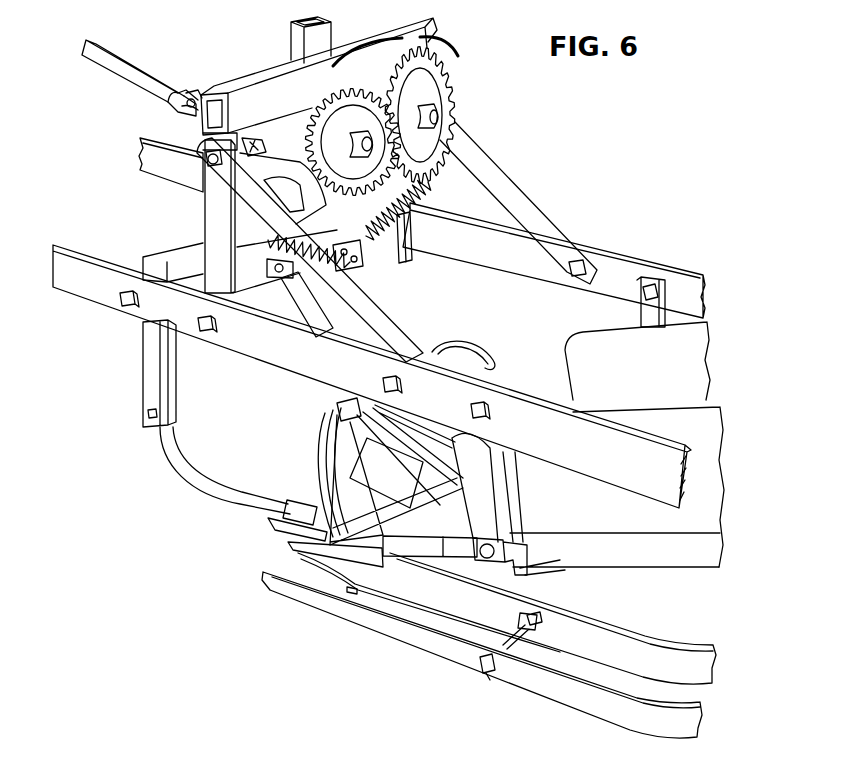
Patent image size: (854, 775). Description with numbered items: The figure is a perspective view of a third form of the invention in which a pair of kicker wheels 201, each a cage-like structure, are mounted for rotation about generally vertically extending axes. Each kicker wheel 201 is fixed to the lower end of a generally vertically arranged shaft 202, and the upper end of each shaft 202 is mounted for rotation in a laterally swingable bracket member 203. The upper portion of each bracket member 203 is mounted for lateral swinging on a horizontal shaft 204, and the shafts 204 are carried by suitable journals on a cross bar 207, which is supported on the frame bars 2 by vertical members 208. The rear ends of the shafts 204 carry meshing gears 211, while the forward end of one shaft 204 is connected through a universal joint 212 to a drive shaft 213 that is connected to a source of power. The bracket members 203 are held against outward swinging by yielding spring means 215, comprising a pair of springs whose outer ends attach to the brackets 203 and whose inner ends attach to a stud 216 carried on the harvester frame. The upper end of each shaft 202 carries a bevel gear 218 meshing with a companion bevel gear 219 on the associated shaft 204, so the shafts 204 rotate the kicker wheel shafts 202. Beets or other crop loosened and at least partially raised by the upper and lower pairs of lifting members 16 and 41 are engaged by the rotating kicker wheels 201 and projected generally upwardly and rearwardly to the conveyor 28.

The frame bars 2 is at (620, 268).
The upper lifting members 16 is at (350, 472).
The conveyor 28 is at (648, 575).
The lower lifting members 41 is at (282, 544).
The kicker wheels 201 is at (468, 344).
The shaft 202 is at (400, 308).
The bracket member 203 is at (252, 228).
The shaft 204 is at (376, 80).
The cross bar 207 is at (253, 82).
The vertical members 208 is at (213, 197).
The meshing gears 211 is at (357, 75).
The universal joint 212 is at (194, 95).
The drive shaft 213 is at (118, 72).
The yielding spring means 215 is at (431, 192).
The stud 216 is at (375, 266).
The bevel gear 218 is at (207, 161).
The companion bevel gear 219 is at (262, 136).